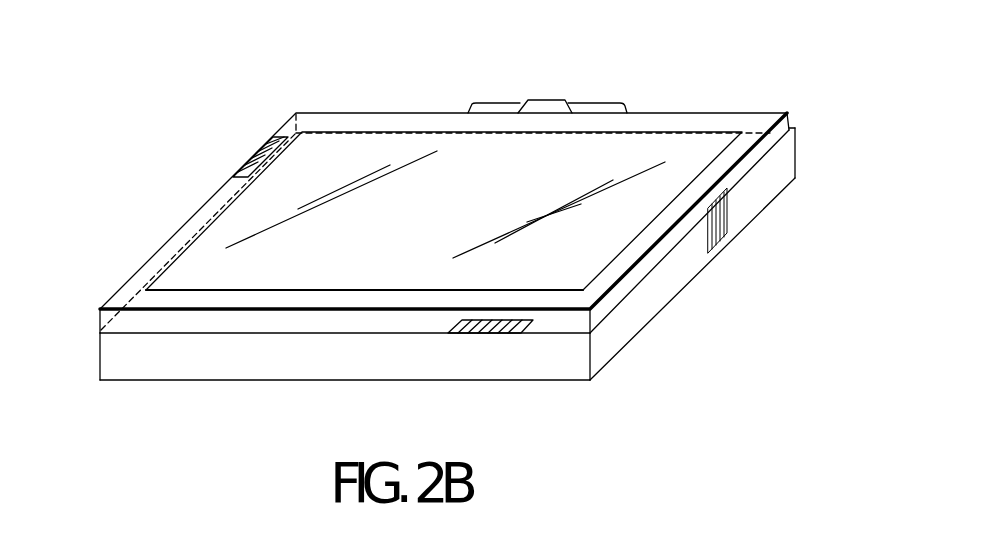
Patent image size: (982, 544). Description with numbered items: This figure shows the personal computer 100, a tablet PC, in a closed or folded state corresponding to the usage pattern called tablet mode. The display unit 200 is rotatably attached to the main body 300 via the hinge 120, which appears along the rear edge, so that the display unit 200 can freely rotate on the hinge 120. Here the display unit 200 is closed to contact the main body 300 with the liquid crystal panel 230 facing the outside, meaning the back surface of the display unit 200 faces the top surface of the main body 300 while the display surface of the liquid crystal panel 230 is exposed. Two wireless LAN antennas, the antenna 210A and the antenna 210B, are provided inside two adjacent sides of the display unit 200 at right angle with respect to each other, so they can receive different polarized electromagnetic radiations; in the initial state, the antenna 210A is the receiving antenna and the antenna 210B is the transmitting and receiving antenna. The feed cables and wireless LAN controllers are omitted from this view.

The personal computer 100 is at (764, 87).
The hinge 120 is at (543, 107).
The display unit 200 is at (167, 217).
The antenna 210A is at (490, 337).
The antenna 210B is at (263, 141).
The liquid crystal panel 230 is at (597, 248).
The main body 300 is at (141, 395).